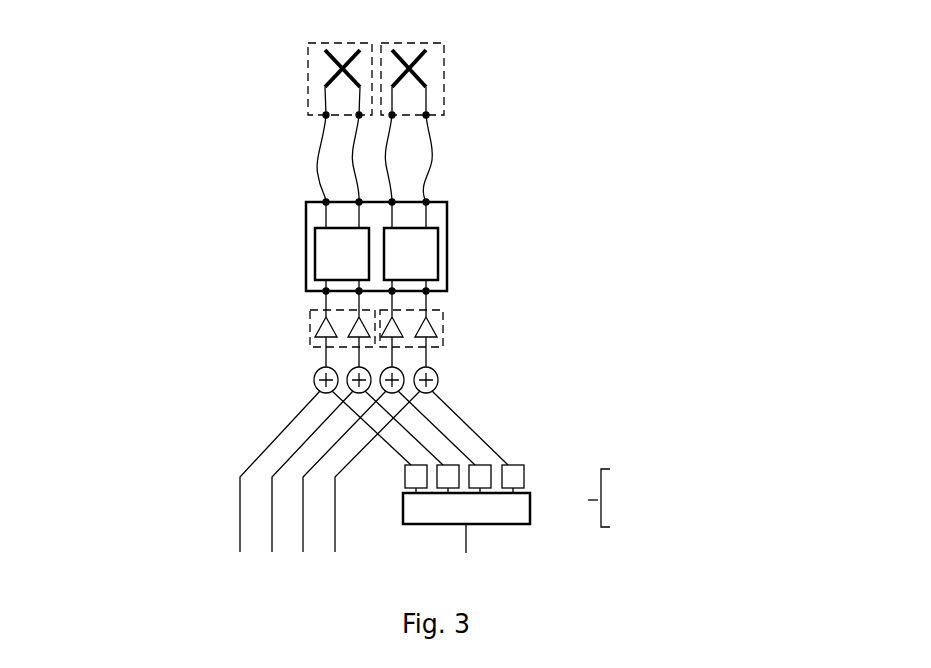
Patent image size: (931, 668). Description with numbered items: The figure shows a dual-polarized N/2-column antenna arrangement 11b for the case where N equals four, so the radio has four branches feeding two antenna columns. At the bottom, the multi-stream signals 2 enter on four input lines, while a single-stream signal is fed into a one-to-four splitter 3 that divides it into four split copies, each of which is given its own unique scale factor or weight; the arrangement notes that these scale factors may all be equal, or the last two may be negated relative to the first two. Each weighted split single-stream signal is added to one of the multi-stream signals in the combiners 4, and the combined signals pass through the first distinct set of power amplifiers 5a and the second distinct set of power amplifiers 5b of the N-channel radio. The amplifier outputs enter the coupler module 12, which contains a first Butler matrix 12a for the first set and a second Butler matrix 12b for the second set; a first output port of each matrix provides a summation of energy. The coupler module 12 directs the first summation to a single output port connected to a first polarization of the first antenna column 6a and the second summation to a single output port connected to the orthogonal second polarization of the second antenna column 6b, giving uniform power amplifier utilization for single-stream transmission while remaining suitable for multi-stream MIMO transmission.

The dual-polarized N/2-column antenna arrangement 11b is at (146, 53).
The first antenna column 6a is at (307, 78).
The second antenna column 6b is at (444, 90).
The coupler module 12 is at (306, 212).
The first N/2×N/2 Butler matrix 12a is at (315, 262).
The second N/2×N/2 Butler matrix 12b is at (447, 253).
The first distinct set of power amplifiers 5a is at (310, 323).
The second distinct set of power amplifiers 5b is at (443, 333).
The combiners 4 is at (314, 374).
The input signals 2 is at (335, 540).
The weighting / splitter unit 3 is at (466, 532).